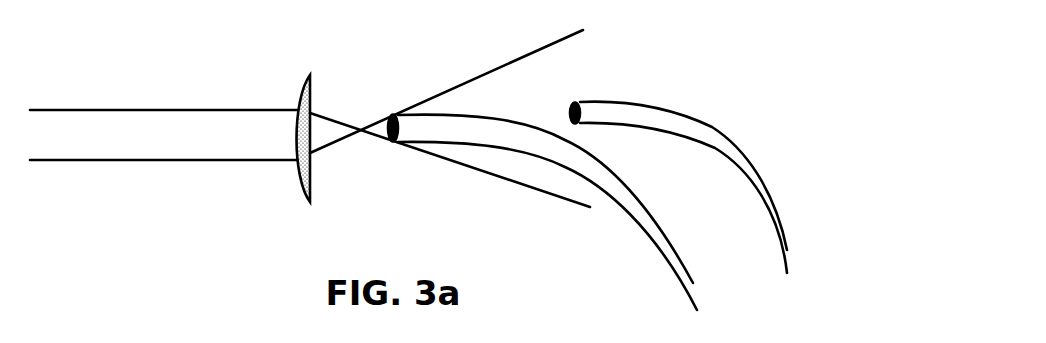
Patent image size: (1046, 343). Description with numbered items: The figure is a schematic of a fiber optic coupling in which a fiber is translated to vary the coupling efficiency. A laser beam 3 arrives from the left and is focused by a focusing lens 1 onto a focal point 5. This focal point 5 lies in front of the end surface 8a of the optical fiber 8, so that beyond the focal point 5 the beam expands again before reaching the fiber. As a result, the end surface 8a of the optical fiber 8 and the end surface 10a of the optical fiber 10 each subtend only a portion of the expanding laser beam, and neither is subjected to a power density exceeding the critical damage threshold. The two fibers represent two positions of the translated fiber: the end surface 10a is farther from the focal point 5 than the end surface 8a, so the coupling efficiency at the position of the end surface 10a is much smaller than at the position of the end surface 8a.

The focusing lens 1 is at (323, 100).
The laser beam 3 is at (97, 110).
The focal point 5 is at (377, 128).
The optical fiber 8 is at (480, 113).
The end surface of the optical fiber 8a is at (393, 103).
The optical fiber 10 is at (705, 110).
The end surface of the optical fiber 10a is at (573, 100).